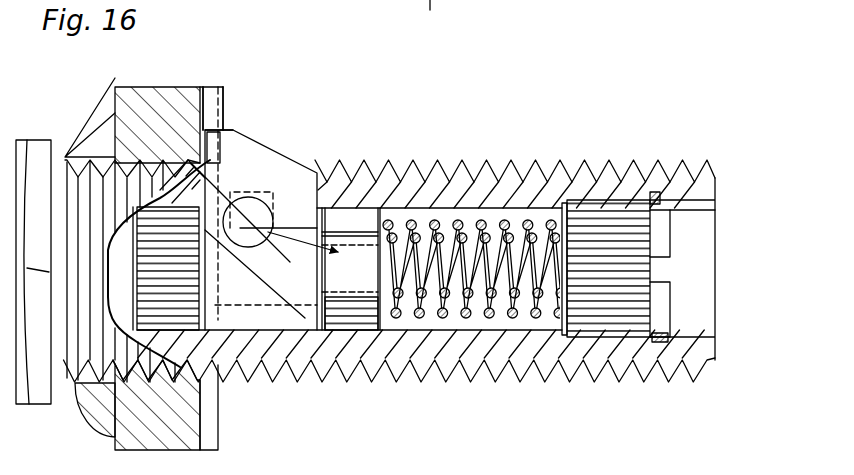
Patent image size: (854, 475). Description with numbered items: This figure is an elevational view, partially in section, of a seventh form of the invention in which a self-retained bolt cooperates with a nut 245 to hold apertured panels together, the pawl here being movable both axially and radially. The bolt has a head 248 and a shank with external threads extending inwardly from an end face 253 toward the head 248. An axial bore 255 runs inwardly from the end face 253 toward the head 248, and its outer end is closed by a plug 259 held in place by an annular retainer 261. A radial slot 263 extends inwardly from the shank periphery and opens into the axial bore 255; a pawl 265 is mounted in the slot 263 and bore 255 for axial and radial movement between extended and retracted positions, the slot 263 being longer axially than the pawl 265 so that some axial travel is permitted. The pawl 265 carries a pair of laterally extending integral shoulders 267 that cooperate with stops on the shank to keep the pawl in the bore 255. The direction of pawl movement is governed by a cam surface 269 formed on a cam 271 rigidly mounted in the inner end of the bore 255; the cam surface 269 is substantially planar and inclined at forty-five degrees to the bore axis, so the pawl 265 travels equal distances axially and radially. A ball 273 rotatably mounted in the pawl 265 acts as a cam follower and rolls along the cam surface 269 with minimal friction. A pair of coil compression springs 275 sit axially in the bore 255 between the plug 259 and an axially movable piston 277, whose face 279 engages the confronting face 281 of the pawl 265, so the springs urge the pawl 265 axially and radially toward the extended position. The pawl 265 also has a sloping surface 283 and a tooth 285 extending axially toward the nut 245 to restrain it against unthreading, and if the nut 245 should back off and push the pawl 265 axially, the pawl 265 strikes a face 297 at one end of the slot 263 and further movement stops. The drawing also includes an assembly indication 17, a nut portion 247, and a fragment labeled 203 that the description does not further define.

The fastener assembly 17 is at (170, 84).
The nut 245 is at (140, 84).
The nut flange 247 is at (93, 400).
The head 248 is at (30, 158).
The end face 253 is at (722, 188).
The axial bore 255 is at (440, 322).
The plug 259 is at (635, 318).
The annular retainer 261 is at (672, 209).
The radial slot 263 is at (320, 196).
The pawl 265 is at (254, 163).
The integral shoulders 267 is at (283, 187).
The cam surface 269 is at (300, 350).
The cam 271 is at (243, 314).
The ball 273 is at (242, 250).
The coil compression springs 275 is at (483, 225).
The piston 277 is at (386, 205).
The face 279 is at (305, 318).
The face 281 is at (330, 185).
The sloping surface 283 is at (258, 155).
The tooth 285 is at (213, 150).
The face 297 is at (353, 220).
The adjacent figure label 203 is at (459, 470).